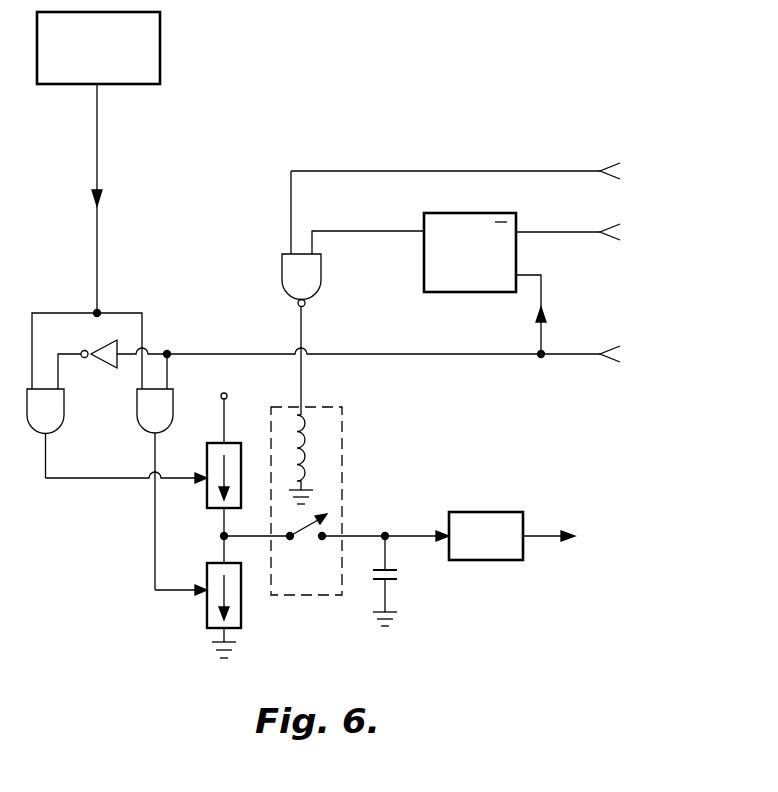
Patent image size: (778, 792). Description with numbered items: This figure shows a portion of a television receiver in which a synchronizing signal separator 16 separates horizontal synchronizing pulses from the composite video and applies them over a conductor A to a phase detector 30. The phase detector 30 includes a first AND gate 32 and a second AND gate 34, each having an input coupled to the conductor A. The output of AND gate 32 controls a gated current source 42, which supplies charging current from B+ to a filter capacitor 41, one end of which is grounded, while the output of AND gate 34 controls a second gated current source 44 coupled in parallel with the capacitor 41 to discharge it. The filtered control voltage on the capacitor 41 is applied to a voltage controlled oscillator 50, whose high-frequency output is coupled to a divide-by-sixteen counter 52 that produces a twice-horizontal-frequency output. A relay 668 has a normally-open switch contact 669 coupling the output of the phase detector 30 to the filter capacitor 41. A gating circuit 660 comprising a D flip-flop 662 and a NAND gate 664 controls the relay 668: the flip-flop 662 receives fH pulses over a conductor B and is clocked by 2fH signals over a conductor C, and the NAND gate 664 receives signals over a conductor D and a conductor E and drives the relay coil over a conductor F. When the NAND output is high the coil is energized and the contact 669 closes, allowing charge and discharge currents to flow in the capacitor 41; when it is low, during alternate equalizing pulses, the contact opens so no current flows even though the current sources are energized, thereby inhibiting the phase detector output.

The synchronizing signal separator 16 is at (139, 86).
The phase detector 30 is at (117, 453).
The first AND gate 32 is at (64, 428).
The second AND gate 34 is at (137, 410).
The filter capacitor 41 is at (399, 574).
The gated current source 42 is at (209, 456).
The second gated current source 44 is at (208, 565).
The voltage controlled oscillator 50 is at (497, 511).
The divide-by-16 counter 52 is at (600, 551).
The gating circuit 660 is at (381, 208).
The D flip-flop 662 is at (478, 293).
The NAND gate 664 is at (321, 291).
The relay 668 is at (307, 477).
The normally-open switch contact 669 is at (326, 524).
The conductor A is at (97, 225).
The conductor B is at (580, 351).
The conductor C is at (569, 231).
The conductor D is at (397, 233).
The conductor E is at (535, 170).
The conductor F is at (304, 378).